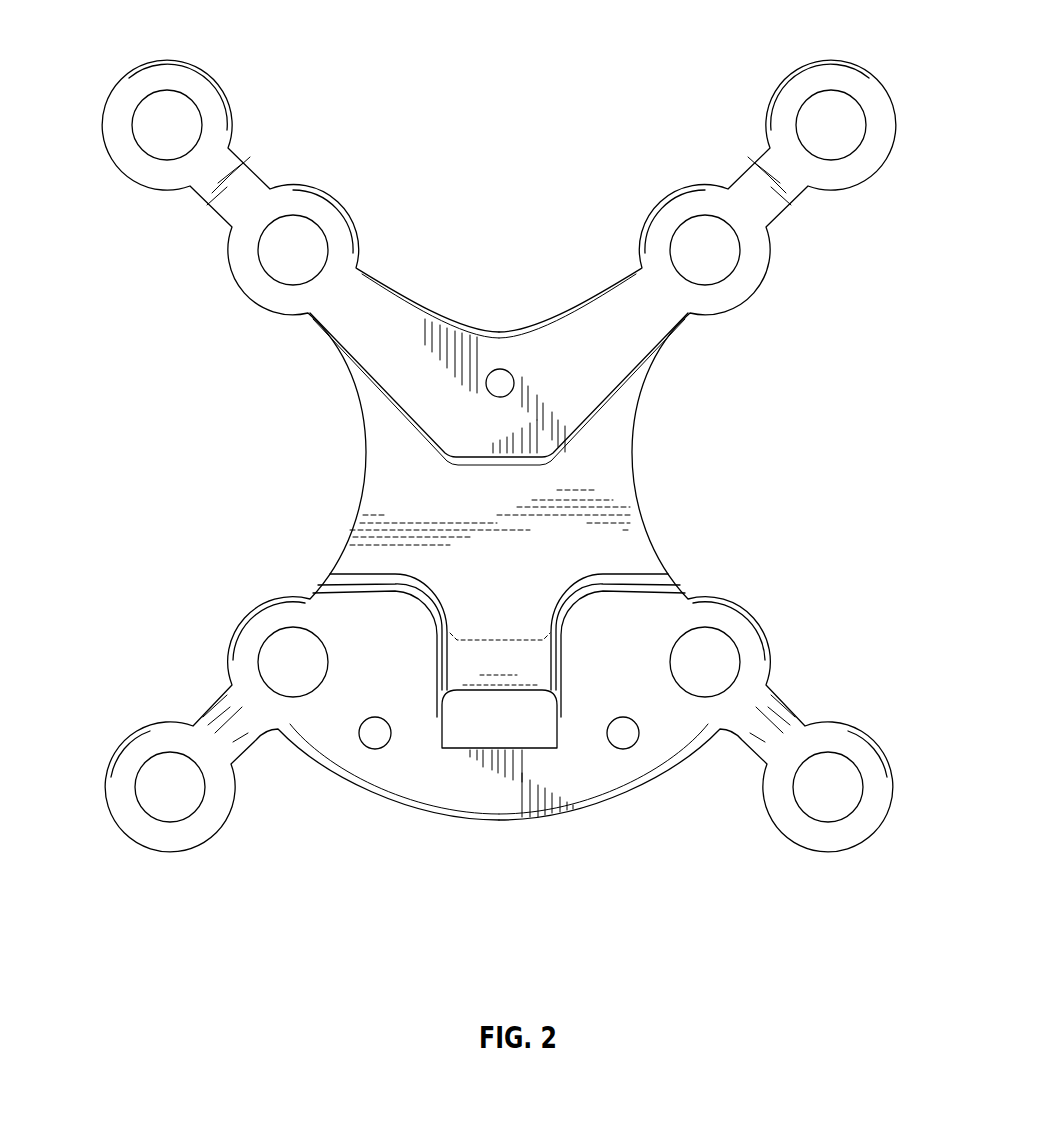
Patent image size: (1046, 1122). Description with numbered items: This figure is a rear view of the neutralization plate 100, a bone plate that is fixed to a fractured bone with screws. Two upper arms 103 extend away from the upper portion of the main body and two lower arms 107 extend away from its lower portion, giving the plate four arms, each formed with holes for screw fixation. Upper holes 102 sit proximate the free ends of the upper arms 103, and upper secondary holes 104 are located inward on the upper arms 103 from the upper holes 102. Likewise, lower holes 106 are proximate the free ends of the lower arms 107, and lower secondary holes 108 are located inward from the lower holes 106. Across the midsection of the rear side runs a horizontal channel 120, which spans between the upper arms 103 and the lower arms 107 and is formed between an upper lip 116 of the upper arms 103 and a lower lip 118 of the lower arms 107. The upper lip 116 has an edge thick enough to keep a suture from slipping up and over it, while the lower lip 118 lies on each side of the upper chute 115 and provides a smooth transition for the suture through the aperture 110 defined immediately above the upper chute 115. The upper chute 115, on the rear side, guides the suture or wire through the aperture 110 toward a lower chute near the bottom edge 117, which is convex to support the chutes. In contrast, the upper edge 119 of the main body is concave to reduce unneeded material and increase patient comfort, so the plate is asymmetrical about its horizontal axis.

The neutralization plate 100 is at (916, 398).
The upper holes 102 is at (143, 125).
The upper arms 103 is at (210, 100).
The upper secondary holes 104 is at (285, 257).
The lower holes 106 is at (145, 777).
The lower arms 107 is at (167, 851).
The lower secondary holes 108 is at (275, 657).
The aperture 110 is at (492, 722).
The upper chute 115 is at (495, 663).
The upper lip 116 is at (548, 463).
The bottom edge 117 is at (510, 822).
The lower lip 118 is at (373, 590).
The upper edge 119 is at (552, 322).
The channel 120 is at (527, 560).